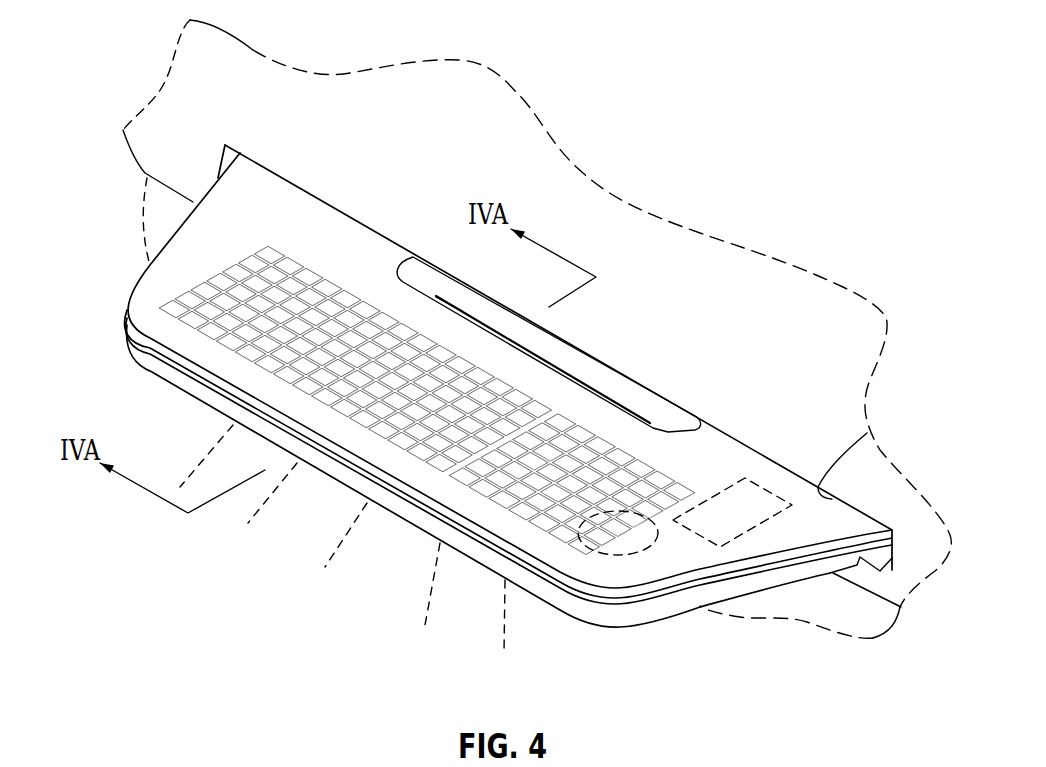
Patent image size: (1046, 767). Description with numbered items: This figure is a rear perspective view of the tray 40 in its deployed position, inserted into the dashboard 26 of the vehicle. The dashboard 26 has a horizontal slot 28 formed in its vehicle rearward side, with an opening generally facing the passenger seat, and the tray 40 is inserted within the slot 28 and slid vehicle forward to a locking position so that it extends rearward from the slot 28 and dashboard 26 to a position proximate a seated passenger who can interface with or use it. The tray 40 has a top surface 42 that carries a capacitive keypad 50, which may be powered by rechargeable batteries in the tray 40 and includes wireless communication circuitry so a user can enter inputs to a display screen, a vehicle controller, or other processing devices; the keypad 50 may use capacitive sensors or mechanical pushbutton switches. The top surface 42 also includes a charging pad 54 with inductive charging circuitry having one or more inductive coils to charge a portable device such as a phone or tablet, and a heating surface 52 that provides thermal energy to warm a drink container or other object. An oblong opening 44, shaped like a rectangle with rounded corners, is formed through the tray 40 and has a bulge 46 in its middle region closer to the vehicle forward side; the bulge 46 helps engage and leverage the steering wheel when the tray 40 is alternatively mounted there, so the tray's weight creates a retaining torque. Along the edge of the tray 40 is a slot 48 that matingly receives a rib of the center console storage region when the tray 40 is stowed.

The dashboard 26 is at (797, 377).
The horizontal slot 28 is at (862, 440).
The tray 40 is at (215, 178).
The top surface 42 is at (196, 238).
The opening 44 is at (648, 403).
The bulge 46 is at (573, 368).
The slot 48 is at (445, 521).
The capacitive keypad 50 is at (210, 280).
The heating surface 52 is at (650, 547).
The charging pad 54 is at (760, 525).